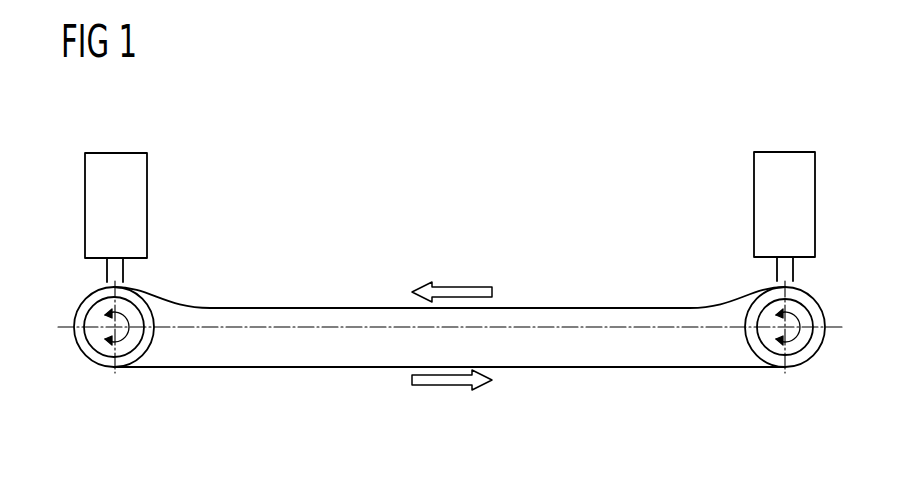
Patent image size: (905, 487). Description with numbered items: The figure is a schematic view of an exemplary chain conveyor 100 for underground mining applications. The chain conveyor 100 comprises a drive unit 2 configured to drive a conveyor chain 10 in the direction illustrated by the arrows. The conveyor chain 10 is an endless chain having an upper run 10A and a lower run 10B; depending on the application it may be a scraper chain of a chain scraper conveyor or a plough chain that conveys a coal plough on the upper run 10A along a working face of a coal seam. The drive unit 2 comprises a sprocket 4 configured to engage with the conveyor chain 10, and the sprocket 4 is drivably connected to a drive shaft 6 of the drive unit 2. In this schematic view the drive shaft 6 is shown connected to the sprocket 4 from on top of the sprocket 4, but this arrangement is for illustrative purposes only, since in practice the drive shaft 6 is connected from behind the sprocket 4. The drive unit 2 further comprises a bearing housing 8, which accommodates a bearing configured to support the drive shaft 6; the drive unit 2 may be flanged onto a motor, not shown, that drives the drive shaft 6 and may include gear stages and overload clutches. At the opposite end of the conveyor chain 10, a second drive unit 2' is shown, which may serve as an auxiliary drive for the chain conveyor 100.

The chain conveyor 100 is at (458, 196).
The drive unit 2 is at (144, 253).
The second drive unit 2' is at (758, 259).
The bearing housing 8 is at (136, 167).
The drive shaft 6 is at (123, 266).
The sprocket 4 is at (145, 328).
The conveyor chain 10 is at (312, 286).
The upper run 10A is at (578, 307).
The lower run 10B is at (300, 369).